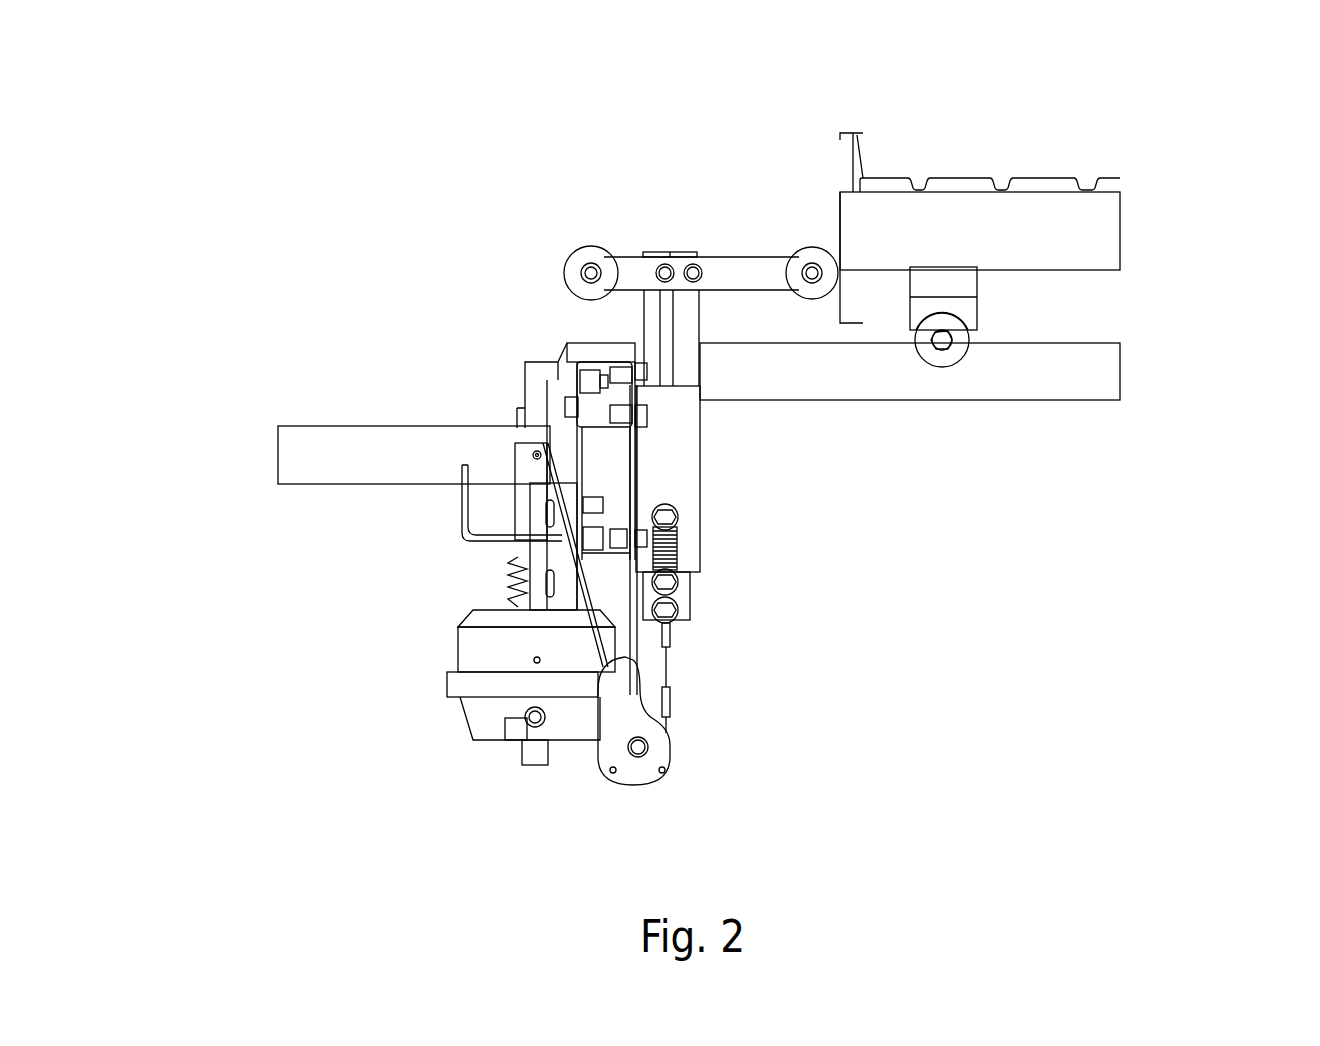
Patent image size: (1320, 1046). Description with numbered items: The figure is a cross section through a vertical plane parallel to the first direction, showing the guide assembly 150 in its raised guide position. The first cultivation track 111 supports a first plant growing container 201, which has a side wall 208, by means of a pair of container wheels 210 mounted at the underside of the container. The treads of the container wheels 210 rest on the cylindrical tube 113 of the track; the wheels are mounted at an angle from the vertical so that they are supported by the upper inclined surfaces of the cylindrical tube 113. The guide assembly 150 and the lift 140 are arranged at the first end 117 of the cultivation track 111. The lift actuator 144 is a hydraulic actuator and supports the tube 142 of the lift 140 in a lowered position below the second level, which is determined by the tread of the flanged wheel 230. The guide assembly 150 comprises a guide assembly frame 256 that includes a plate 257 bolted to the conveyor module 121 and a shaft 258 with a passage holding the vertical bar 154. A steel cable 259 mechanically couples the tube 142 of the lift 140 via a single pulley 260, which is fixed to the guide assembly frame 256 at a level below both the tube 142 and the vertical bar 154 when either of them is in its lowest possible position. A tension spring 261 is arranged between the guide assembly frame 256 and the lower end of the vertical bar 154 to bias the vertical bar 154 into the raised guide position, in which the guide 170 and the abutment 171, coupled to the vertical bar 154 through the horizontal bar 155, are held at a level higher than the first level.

The first cultivation track 111 is at (985, 430).
The cylindrical tube 113 is at (1042, 343).
The first end 117 is at (597, 330).
The conveyor module 121 is at (597, 420).
The lift 140 is at (423, 647).
The tube 142 is at (398, 426).
The lift actuator 144 is at (485, 742).
The guide assembly 150 is at (547, 229).
The vertical bar 154 is at (687, 320).
The horizontal bar 155 is at (690, 256).
The guide 170 is at (562, 276).
The abutment 171 is at (790, 250).
The first plant growing container 201 is at (1122, 205).
The side wall 208 is at (840, 217).
The container wheels 210 is at (962, 347).
The flanged wheel 230 is at (540, 358).
The guide assembly frame 256 is at (737, 502).
The plate 257 is at (637, 648).
The shaft 258 is at (702, 520).
The steel cable 259 is at (587, 632).
The pulley 260 is at (600, 768).
The tension spring 261 is at (678, 547).